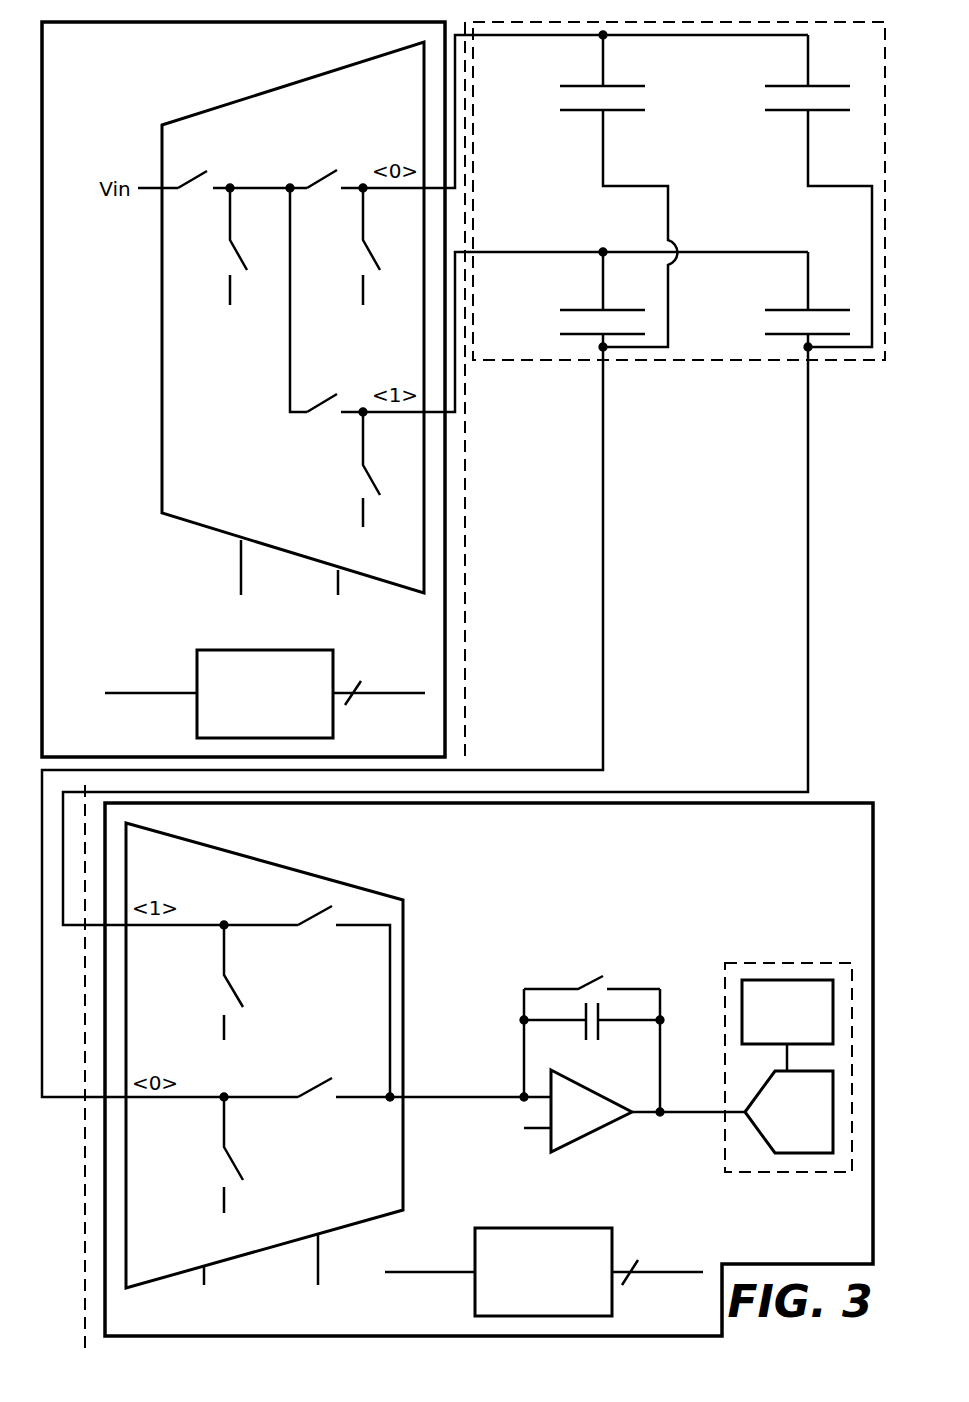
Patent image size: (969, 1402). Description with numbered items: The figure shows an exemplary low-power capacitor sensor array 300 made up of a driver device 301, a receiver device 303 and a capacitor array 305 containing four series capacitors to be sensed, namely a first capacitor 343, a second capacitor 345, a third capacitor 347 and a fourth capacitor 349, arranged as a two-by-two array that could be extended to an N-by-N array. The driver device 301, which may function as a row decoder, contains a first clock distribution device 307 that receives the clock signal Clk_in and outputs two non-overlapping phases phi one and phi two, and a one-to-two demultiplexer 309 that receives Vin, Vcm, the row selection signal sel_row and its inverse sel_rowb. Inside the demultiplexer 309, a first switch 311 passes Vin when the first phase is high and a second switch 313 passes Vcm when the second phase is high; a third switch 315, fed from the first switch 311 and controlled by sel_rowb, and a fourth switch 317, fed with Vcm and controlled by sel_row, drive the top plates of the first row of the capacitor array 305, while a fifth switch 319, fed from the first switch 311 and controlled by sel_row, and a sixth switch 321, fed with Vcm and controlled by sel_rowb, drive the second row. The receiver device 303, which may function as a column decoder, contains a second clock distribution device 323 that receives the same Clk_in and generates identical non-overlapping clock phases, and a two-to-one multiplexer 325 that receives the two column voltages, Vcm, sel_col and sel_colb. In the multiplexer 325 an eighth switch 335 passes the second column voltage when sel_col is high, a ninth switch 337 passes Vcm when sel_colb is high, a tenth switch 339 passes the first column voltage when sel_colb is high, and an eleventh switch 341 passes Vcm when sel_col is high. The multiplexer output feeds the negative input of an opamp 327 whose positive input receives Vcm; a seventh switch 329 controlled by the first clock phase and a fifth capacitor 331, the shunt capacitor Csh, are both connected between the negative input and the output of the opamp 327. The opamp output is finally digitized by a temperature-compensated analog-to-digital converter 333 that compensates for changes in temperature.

The low-power capacitor sensor array 300 is at (146, 17).
The driver device 301 is at (86, 92).
The receiver device 303 is at (777, 877).
The capacitor array 305 is at (834, 62).
The first clock distribution device 307 is at (247, 722).
The 1:2 demultiplexer 309 is at (180, 499).
The first switch 311 is at (192, 187).
The second switch 313 is at (238, 257).
The third switch 315 is at (330, 185).
The fourth switch 317 is at (372, 257).
The fifth switch 319 is at (336, 396).
The sixth switch 321 is at (376, 482).
The second clock distribution device 323 is at (525, 1301).
The 2:1 multiplexer 325 is at (344, 1207).
The opamp 327 is at (593, 1135).
The seventh switch 329 is at (590, 980).
The fifth capacitor 331 is at (580, 1025).
The temperature-compensated analog-to-digital converter 333 is at (812, 1173).
The eighth switch 335 is at (313, 918).
The ninth switch 337 is at (233, 993).
The tenth switch 339 is at (313, 1090).
The eleventh switch 341 is at (233, 1165).
The first capacitor 343 is at (583, 112).
The second capacitor 345 is at (788, 112).
The third capacitor 347 is at (583, 336).
The fourth capacitor 349 is at (788, 336).